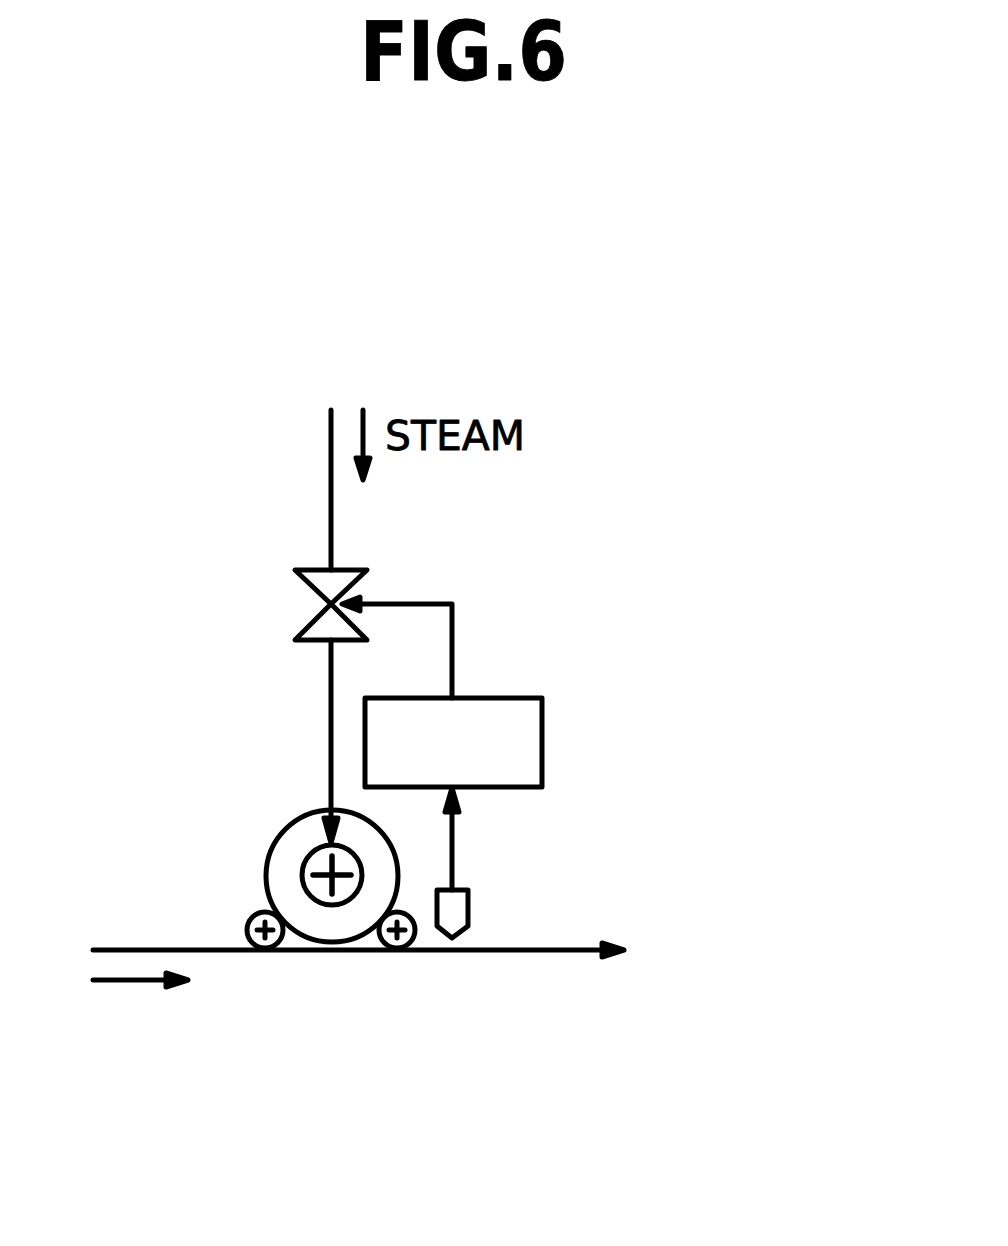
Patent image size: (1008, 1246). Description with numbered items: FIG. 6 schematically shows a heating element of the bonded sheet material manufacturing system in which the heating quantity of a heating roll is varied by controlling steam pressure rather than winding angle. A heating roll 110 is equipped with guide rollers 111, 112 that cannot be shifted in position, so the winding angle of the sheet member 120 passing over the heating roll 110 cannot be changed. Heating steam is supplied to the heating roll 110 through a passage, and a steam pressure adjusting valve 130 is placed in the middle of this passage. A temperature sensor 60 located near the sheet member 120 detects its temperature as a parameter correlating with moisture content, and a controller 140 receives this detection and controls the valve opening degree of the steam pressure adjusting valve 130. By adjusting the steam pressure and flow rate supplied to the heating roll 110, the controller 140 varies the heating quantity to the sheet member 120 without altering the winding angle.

The temperature sensor (moisture content detecting means) 60 is at (470, 911).
The heating roll 110 is at (330, 946).
The guide roller 111 is at (282, 949).
The guide roller 112 is at (381, 950).
The sheet member 120 is at (117, 948).
The steam pressure adjusting valve (valve means) 130 is at (314, 581).
The controller (control means) 140 is at (518, 697).